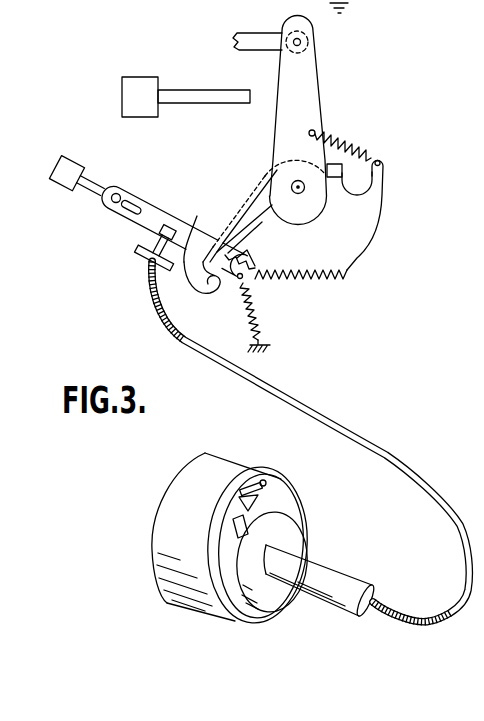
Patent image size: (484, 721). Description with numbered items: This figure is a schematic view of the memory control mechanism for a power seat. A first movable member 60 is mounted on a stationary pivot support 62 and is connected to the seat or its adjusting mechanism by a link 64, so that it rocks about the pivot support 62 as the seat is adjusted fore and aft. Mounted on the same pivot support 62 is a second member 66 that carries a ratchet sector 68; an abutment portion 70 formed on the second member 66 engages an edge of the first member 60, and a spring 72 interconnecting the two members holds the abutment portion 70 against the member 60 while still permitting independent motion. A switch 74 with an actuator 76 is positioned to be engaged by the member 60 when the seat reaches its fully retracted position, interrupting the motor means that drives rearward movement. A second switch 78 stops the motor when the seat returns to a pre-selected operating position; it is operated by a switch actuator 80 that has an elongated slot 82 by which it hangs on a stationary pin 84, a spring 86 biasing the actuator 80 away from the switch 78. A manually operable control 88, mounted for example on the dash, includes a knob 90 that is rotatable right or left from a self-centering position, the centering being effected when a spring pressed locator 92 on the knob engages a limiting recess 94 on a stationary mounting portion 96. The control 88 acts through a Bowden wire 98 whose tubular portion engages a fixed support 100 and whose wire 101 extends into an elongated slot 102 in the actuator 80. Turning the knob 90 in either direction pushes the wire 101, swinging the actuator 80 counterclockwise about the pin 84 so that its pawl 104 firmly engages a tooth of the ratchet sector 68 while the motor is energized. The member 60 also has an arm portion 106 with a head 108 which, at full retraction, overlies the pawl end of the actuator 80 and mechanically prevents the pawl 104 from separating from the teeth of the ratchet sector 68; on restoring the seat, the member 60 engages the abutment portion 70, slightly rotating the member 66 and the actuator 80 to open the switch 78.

The first movable member 60 is at (317, 86).
The pivot support 62 is at (291, 184).
The link 64 is at (253, 33).
The second member 66 is at (371, 228).
The ratchet sector 68 is at (357, 262).
The abutment portion 70 is at (343, 175).
The spring 72 is at (363, 147).
The switch 74 is at (122, 99).
The actuator 76 is at (189, 90).
The switch 78 is at (63, 191).
The switch actuator 80 is at (161, 209).
The elongated slot 82 is at (136, 201).
The stationary pin 84 is at (118, 193).
The spring 86 is at (262, 331).
The manually operable control 88 is at (152, 533).
The knob 90 is at (205, 452).
The spring pressed locator 92 is at (265, 490).
The limiting recess 94 is at (250, 508).
The stationary mounting portion 96 is at (300, 545).
The Bowden wire 98 is at (389, 447).
The fixed support 100 is at (141, 258).
The wire 101 is at (141, 249).
The elongated slot 102 is at (186, 240).
The pawl 104 is at (258, 267).
The arm portion 106 is at (258, 216).
The head 108 is at (222, 296).